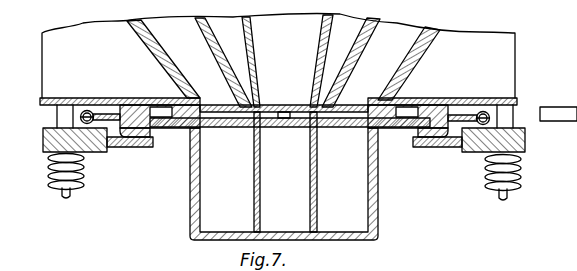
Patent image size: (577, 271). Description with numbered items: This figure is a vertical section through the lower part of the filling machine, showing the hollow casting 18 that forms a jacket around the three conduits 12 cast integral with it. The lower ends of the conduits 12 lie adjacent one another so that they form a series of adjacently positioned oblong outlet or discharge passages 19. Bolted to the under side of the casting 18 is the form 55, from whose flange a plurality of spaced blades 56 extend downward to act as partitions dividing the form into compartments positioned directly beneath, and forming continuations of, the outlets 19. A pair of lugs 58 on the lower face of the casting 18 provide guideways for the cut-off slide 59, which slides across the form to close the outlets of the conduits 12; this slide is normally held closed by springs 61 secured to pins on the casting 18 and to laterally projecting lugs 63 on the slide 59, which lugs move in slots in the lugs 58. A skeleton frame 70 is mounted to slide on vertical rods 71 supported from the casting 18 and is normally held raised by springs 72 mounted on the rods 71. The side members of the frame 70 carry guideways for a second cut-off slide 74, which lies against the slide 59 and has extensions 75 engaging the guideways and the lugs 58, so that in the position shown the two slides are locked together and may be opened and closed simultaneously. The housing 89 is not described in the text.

The conduit 12 is at (138, 44).
The casting 18 is at (515, 58).
The outlet or discharge passage 19 is at (232, 118).
The form 55 is at (377, 100).
The blade 56 is at (253, 200).
The lug 58 is at (150, 138).
The cut-off slide 59 is at (253, 90).
The spring 61 is at (82, 100).
The laterally projecting lug 63 is at (95, 111).
The skeleton frame 70 is at (44, 149).
The vertical rod or post 71 is at (56, 117).
The spring 72 is at (48, 178).
The second cut-off slide 74 is at (390, 127).
The extension 75 is at (452, 148).
The housing 89 is at (190, 218).